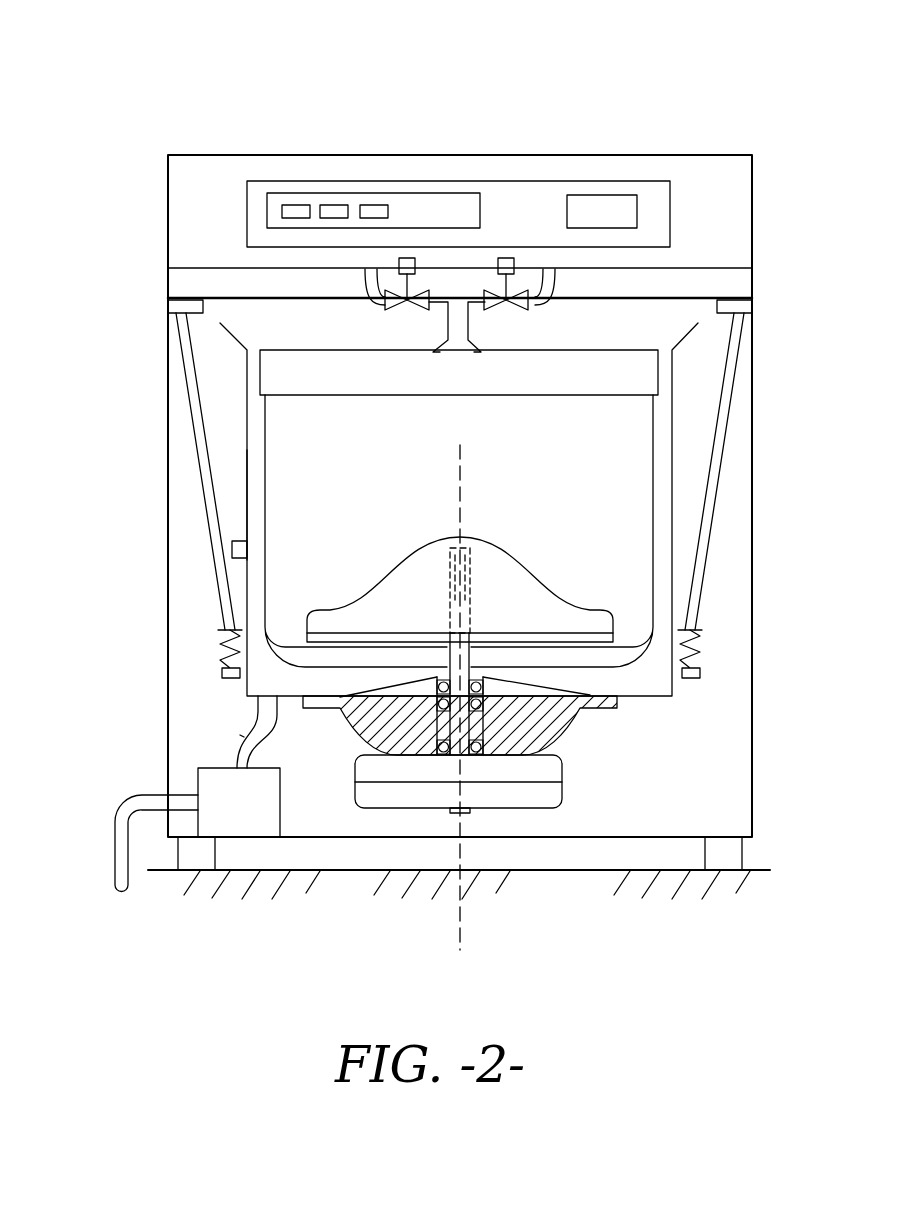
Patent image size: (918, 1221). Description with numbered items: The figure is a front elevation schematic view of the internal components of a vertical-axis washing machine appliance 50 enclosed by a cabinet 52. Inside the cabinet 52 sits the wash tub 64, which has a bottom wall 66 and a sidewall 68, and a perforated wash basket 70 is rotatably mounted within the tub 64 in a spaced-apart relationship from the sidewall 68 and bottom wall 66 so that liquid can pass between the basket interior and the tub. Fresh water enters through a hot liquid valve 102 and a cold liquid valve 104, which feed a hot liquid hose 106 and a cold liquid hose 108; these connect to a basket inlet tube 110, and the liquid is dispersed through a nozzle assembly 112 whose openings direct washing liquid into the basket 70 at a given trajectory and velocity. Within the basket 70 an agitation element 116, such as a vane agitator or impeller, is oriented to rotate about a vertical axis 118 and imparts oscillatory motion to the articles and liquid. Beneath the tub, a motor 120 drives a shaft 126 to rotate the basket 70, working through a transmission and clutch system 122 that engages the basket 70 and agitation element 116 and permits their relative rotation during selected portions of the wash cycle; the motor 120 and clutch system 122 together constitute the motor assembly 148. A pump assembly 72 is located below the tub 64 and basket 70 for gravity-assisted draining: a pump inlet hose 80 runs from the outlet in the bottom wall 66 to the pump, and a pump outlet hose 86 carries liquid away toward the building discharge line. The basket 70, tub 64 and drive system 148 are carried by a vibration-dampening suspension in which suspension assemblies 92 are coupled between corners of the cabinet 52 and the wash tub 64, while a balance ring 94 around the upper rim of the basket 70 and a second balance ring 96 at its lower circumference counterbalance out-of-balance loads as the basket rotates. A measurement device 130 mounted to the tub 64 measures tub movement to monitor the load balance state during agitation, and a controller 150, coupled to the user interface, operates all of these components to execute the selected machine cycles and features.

The washing machine appliance 50 is at (251, 86).
The cabinet 52 is at (752, 462).
The wash tub 64 is at (167, 456).
The bottom wall 66 is at (258, 712).
The sidewall 68 is at (718, 540).
The basket 70 is at (247, 503).
The pump assembly 72 is at (205, 780).
The pump inlet hose 80 is at (247, 738).
The pump outlet hose 86 is at (112, 847).
The suspension assembly 92 is at (183, 376).
The balance ring 94 is at (330, 360).
The balance ring 96 is at (642, 652).
The hot liquid valve 102 is at (407, 258).
The cold liquid valve 104 is at (506, 258).
The hot liquid hose 106 is at (368, 292).
The cold liquid hose 108 is at (548, 292).
The basket inlet tube 110 is at (478, 347).
The nozzle assembly 112 is at (437, 347).
The agitation element 116 is at (502, 562).
The vertical axis 118 is at (462, 502).
The motor 120 is at (555, 797).
The transmission and clutch system 122 is at (555, 762).
The shaft 126 is at (440, 705).
The measurement device 130 is at (232, 558).
The motor assembly 148 is at (672, 697).
The controller 150 is at (655, 190).